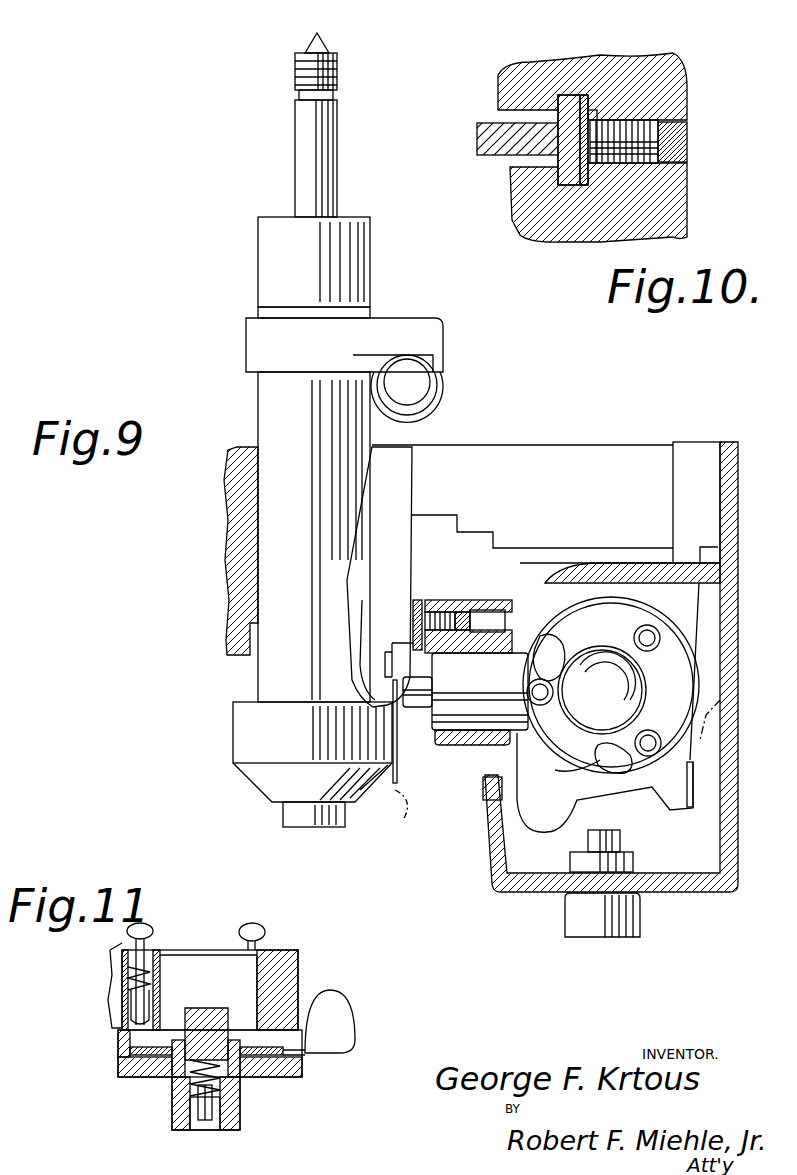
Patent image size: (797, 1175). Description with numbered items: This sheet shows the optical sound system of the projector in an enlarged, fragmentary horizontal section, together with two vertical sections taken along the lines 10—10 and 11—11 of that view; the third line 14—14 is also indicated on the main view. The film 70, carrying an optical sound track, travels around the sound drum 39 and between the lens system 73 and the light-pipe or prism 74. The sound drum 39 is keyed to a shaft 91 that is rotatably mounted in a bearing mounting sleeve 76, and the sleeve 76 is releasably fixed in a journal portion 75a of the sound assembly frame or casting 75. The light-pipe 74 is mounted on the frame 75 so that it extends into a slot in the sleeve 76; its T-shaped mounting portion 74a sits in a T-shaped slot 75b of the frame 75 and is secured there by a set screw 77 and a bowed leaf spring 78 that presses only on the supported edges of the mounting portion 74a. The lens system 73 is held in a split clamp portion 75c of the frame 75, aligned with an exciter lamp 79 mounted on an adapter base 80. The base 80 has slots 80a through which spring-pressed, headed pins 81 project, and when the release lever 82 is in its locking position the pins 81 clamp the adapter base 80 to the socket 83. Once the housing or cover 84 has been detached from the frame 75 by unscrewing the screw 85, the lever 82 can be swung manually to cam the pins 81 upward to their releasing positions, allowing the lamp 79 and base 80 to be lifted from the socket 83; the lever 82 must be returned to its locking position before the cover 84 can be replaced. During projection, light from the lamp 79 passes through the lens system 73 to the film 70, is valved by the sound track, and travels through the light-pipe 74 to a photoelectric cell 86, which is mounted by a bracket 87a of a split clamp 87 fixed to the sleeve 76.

In FIG. 9, the section line 10— 10 is at (370, 620).
In FIG. 9, the section line 11— 11 is at (513, 707).
In FIG. 9, the section line 14- 14 is at (220, 733).
In FIG. 9, the sound drum 39 is at (263, 753).
In FIG. 9, the film 70 is at (399, 765).
In FIG. 9, the lens system 73 is at (477, 686).
In FIG. 9, the light-pipe 74 is at (403, 490).
In FIG. 10, the light-pipe 74 is at (492, 153).
In FIG. 9, the T-shaped mounting portion 74a is at (410, 612).
In FIG. 10, the T-shaped mounting portion 74a is at (557, 117).
In FIG. 9, the sound assembly frame 75 is at (590, 505).
In FIG. 10, the sound assembly frame 75 is at (505, 77).
In FIG. 9, the journal portion 75a is at (235, 480).
In FIG. 10, the T-shaped slot 75b is at (565, 95).
In FIG. 9, the split clamp portion 75c is at (452, 745).
In FIG. 9, the bearing mounting sleeve 76 is at (278, 422).
In FIG. 9, the set screw 77 is at (470, 604).
In FIG. 10, the set screw 77 is at (673, 100).
In FIG. 9, the bowed leaf spring 78 is at (428, 603).
In FIG. 10, the bowed leaf spring 78 is at (640, 60).
In FIG. 9, the exciter lamp 79 is at (588, 728).
In FIG. 9, the adapter base 80 is at (638, 615).
In FIG. 11, the adapter base 80 is at (197, 950).
In FIG. 9, the slots 80a is at (560, 650).
In FIG. 9, the spring-pressed headed pins 81 is at (643, 643).
In FIG. 11, the spring-pressed headed pins 81 is at (257, 925).
In FIG. 9, the release lever 82 is at (697, 773).
In FIG. 11, the release lever 82 is at (340, 1015).
In FIG. 9, the socket 83 is at (553, 722).
In FIG. 11, the socket 83 is at (290, 967).
In FIG. 9, the housing or cover 84 is at (718, 843).
In FIG. 9, the screw 85 is at (647, 917).
In FIG. 9, the photoelectric cell 86 is at (425, 372).
In FIG. 9, the split clamp 87 is at (372, 328).
In FIG. 9, the bracket 87a is at (448, 386).
In FIG. 9, the shaft 91 is at (299, 163).